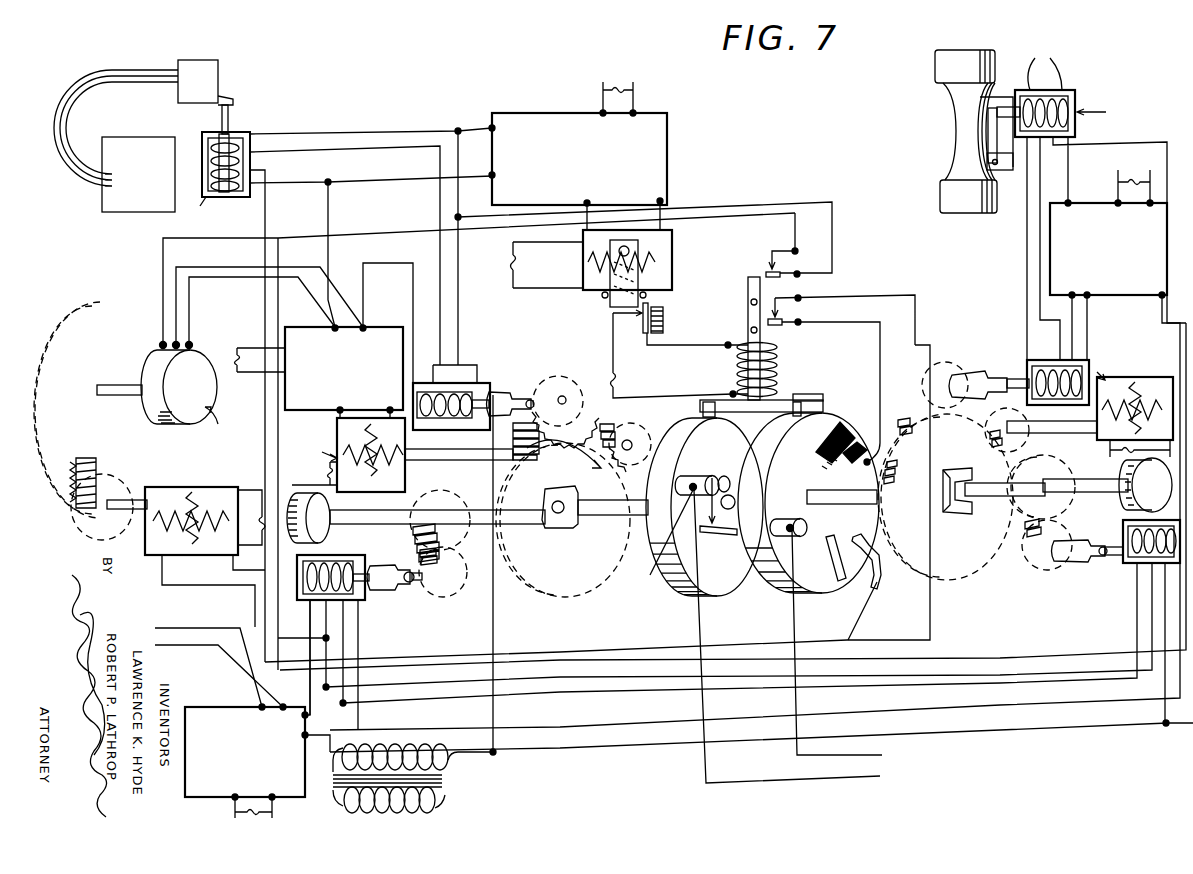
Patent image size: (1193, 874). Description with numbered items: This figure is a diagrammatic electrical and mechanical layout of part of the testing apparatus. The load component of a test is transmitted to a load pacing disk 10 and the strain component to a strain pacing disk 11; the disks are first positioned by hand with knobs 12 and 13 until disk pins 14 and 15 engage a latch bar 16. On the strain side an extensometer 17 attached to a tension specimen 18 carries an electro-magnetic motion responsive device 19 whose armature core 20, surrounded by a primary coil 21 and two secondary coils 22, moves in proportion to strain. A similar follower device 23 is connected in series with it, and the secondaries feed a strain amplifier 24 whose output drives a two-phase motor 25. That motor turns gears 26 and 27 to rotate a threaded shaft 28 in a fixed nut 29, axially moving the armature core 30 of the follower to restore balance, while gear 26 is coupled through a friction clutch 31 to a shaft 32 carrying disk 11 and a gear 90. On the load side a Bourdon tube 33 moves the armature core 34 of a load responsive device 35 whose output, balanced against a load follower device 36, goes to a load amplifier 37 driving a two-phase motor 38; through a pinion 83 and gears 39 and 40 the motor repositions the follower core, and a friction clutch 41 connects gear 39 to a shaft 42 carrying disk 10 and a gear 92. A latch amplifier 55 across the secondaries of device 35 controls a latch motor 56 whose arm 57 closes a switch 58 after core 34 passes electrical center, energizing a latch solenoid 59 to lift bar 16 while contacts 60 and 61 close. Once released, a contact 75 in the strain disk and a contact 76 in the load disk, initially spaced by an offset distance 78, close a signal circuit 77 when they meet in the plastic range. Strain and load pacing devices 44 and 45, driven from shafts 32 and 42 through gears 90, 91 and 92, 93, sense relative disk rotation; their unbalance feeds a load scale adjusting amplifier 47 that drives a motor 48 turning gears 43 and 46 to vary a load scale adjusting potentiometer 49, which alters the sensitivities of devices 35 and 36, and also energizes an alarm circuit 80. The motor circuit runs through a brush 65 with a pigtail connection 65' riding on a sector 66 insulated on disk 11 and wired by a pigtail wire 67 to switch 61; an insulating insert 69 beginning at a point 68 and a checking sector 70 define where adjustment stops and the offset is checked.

The load pacing disk 10 is at (688, 432).
The strain pacing disk 11 is at (835, 418).
The knob 12 is at (1128, 505).
The knob 13 is at (326, 533).
The disk pin 14 is at (805, 398).
The disk pin 15 is at (714, 399).
The latch bar 16 is at (823, 403).
The extensometer 17 is at (1008, 171).
The tension specimen 18 is at (950, 118).
The electrical motion responsive device 19 is at (1101, 113).
The armature core 20 is at (1076, 96).
The primary coil 21 is at (1050, 96).
The secondary coils 22 is at (1045, 66).
The electro-magnetic motion responsive device 23 is at (1030, 360).
The electronic strain amplifier 24 is at (1095, 203).
The two phase motor 25 is at (1100, 441).
The gear 26 is at (906, 418).
The gear 27 is at (928, 380).
The threaded shaft 28 is at (955, 372).
The fixed nut 29 is at (985, 375).
The armature core 30 is at (1016, 378).
The friction clutch 31 is at (950, 470).
The shaft 32 is at (990, 497).
The Bourdon tube 33 is at (72, 78).
The armature core 34 is at (249, 134).
The electro-magnetic type device 35 is at (206, 203).
The load follower device 36 is at (498, 380).
The amplifier 37 is at (385, 327).
The two phase motor 38 is at (416, 443).
The gear 39 is at (513, 443).
The gear 40 is at (577, 386).
The friction clutch 41 is at (563, 518).
The shaft 42 is at (597, 516).
The gear 43 is at (80, 532).
The strain pacing device 44 is at (1121, 571).
The load pacing device 45 is at (369, 602).
The gear 46 is at (75, 478).
The load scale adjusting amplifier 47 is at (216, 700).
The motor 48 is at (151, 562).
The load scale adjusting potentiometer 49 is at (160, 401).
The amplifier 55 is at (668, 138).
The two phase motor 56 is at (679, 254).
The arm 57 is at (609, 300).
The switch 58 is at (645, 322).
The latch solenoid 59 is at (787, 355).
The switch contacts 60 is at (766, 270).
The contacts 61 is at (792, 318).
The brush 65 is at (860, 570).
The pigtail connection 65' is at (873, 611).
The sector 66 is at (832, 557).
The pigtail wire 67 is at (882, 354).
The point 68 is at (856, 463).
The insert of insulation 69 is at (837, 467).
The checking sector 70 is at (853, 437).
The contact 75 is at (722, 536).
The contact 76 is at (710, 477).
The signal circuit 77 is at (880, 777).
The offset distance 78 is at (647, 550).
The alarm signal circuit 80 is at (205, 630).
The pinion 83 is at (632, 424).
The gear 90 is at (1041, 487).
The gear 91 is at (1047, 572).
The gear 92 is at (416, 540).
The gear 93 is at (443, 598).